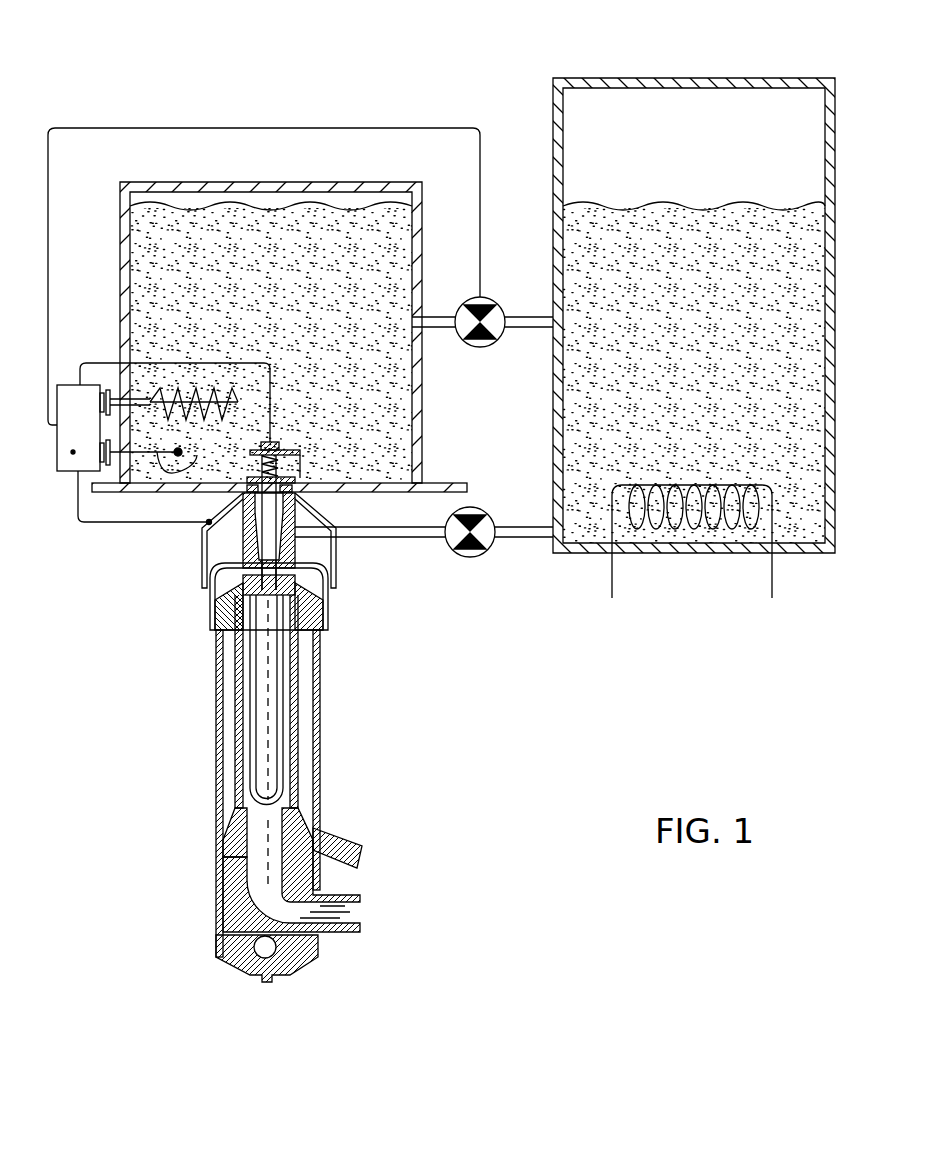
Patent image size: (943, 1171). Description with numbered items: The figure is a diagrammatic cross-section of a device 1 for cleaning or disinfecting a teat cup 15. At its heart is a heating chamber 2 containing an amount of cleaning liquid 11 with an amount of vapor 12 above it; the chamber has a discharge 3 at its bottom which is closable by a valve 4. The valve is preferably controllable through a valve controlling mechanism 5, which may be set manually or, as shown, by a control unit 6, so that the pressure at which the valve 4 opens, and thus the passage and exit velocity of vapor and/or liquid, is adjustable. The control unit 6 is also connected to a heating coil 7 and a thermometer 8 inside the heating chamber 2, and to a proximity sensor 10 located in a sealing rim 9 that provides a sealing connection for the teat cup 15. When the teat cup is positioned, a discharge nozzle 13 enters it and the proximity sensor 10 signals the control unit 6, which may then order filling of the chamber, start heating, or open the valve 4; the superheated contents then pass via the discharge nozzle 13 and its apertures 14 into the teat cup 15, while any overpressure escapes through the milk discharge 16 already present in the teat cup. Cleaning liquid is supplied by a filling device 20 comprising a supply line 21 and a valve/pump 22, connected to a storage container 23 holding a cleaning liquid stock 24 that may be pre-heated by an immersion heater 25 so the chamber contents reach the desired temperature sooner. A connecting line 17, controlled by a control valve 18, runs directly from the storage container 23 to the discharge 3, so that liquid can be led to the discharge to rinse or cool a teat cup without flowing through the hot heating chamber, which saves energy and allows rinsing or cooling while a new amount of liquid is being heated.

The device 1 is at (128, 575).
The heating chamber 2 is at (286, 185).
The discharge 3 is at (300, 497).
The valve 4 is at (345, 493).
The valve controlling mechanism 5 is at (280, 440).
The control unit 6 is at (73, 452).
The heating coil 7 is at (228, 406).
The thermometer 8 is at (195, 455).
The sealing rim 9 is at (333, 550).
The proximity sensor 10 is at (203, 540).
The cleaning liquid 11 is at (147, 260).
The vapor 12 is at (148, 198).
The discharge nozzle 13 is at (287, 694).
The apertures 14 is at (297, 742).
The teat cup 15 is at (218, 782).
The milk discharge 16 is at (348, 912).
The connecting line 17 is at (528, 537).
The control valve 18 is at (470, 557).
The filling device 20 is at (485, 395).
The supply line 21 is at (437, 318).
The valve/pump 22 is at (503, 333).
The storage container 23 is at (557, 112).
The cleaning liquid stock 24 is at (607, 248).
The immersion heater 25 is at (612, 573).